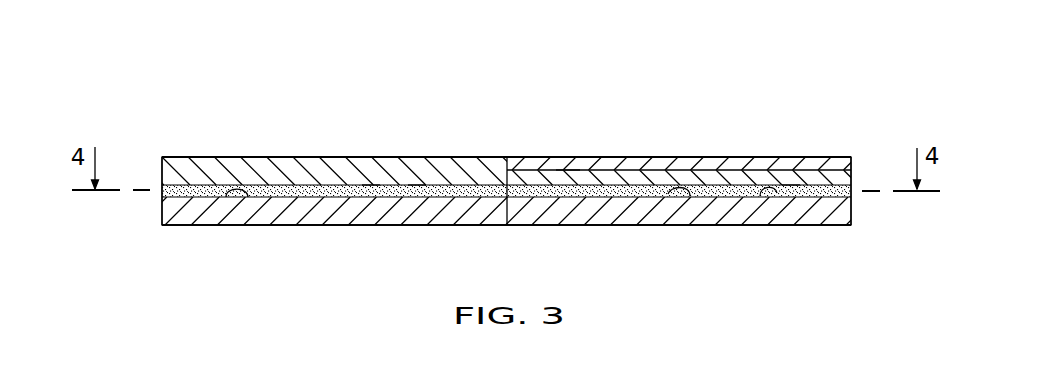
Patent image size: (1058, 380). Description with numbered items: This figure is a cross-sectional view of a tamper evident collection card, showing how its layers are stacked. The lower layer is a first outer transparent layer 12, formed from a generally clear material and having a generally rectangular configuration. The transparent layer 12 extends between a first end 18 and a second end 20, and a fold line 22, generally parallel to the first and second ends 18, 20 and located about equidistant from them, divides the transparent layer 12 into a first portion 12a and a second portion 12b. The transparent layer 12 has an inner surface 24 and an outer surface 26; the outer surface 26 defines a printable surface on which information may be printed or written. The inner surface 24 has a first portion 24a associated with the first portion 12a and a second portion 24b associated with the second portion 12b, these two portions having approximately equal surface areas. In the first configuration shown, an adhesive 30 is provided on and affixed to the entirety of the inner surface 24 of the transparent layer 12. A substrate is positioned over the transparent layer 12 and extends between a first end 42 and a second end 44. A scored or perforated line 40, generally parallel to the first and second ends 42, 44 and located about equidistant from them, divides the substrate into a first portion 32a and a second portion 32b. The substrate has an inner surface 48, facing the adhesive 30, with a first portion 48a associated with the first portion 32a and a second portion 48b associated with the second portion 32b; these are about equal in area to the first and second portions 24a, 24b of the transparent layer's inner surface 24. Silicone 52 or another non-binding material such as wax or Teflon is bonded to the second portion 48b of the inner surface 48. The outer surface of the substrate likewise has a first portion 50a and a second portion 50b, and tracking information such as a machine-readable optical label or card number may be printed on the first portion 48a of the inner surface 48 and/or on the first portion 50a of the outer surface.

The first outer transparent layer 12 is at (832, 236).
The first portion of transparent layer 12a is at (197, 228).
The second portion of transparent layer 12b is at (848, 232).
The first end of transparent layer 18 is at (162, 205).
The second end of transparent layer 20 is at (852, 211).
The fold line 22 is at (504, 216).
The inner surface of transparent layer 24 is at (668, 194).
The first portion of inner surface 24a is at (248, 197).
The second portion of inner surface 24b is at (777, 193).
The outer surface of transparent layer 26 is at (713, 225).
The adhesive 30 is at (856, 186).
The first portion of substrate 32a is at (226, 167).
The second portion of substrate 32b is at (774, 152).
The perforated line 40 is at (507, 184).
The first end of substrate 42 is at (162, 164).
The second end of substrate 44 is at (852, 168).
The inner surface of substrate 48 is at (417, 185).
The first portion of substrate inner surface 48a is at (370, 185).
The second portion of substrate inner surface 48b is at (559, 172).
The first portion of substrate outer surface 50a is at (310, 157).
The second portion of substrate outer surface 50b is at (647, 157).
The silicone 52 is at (792, 186).